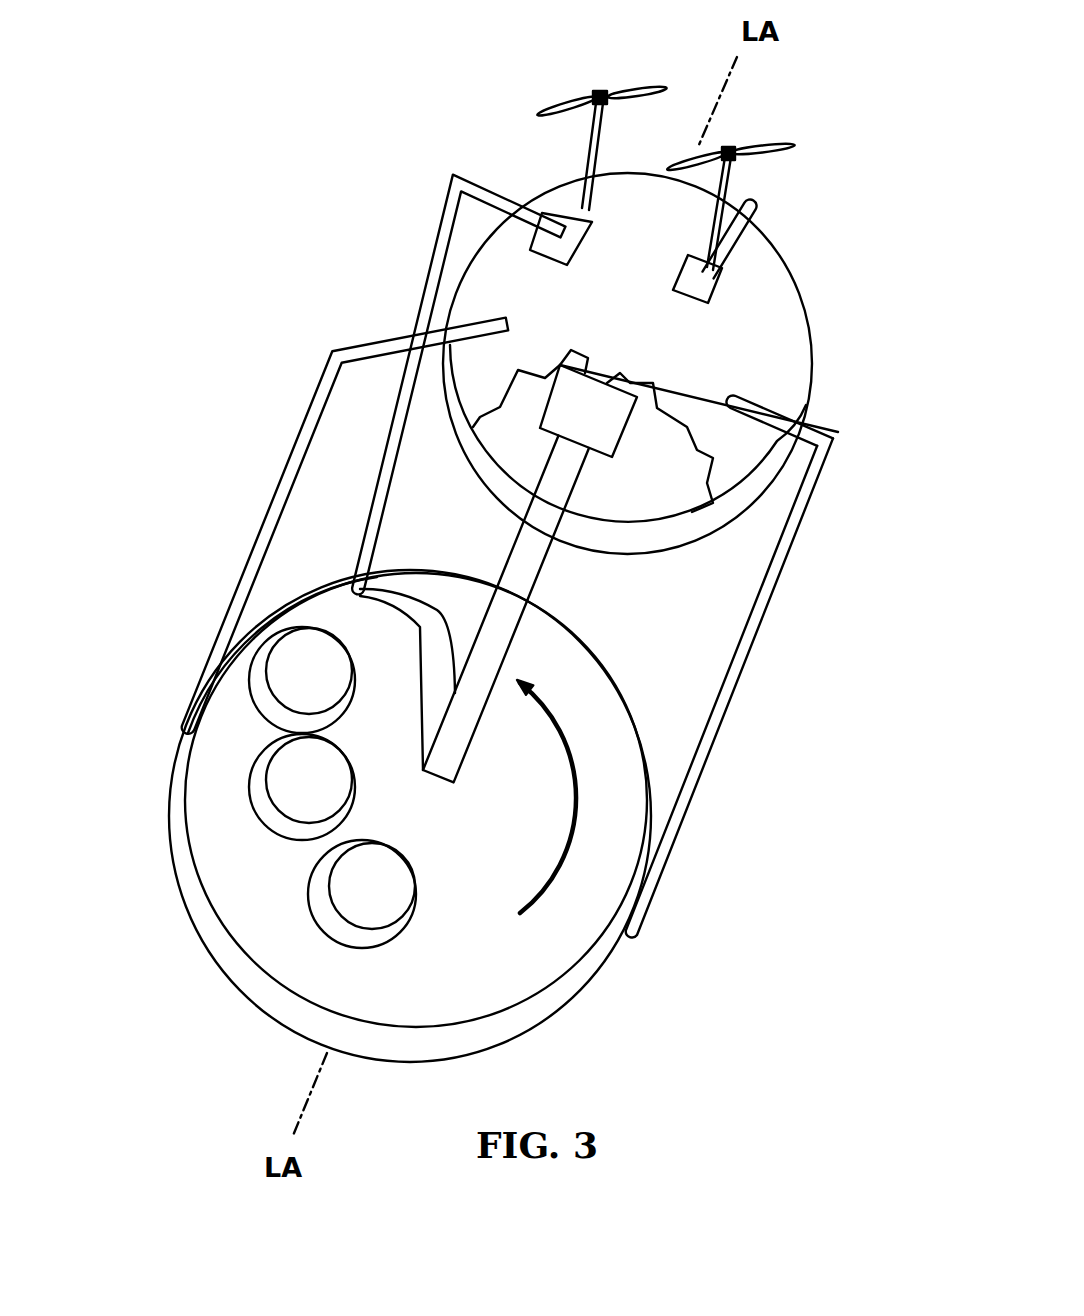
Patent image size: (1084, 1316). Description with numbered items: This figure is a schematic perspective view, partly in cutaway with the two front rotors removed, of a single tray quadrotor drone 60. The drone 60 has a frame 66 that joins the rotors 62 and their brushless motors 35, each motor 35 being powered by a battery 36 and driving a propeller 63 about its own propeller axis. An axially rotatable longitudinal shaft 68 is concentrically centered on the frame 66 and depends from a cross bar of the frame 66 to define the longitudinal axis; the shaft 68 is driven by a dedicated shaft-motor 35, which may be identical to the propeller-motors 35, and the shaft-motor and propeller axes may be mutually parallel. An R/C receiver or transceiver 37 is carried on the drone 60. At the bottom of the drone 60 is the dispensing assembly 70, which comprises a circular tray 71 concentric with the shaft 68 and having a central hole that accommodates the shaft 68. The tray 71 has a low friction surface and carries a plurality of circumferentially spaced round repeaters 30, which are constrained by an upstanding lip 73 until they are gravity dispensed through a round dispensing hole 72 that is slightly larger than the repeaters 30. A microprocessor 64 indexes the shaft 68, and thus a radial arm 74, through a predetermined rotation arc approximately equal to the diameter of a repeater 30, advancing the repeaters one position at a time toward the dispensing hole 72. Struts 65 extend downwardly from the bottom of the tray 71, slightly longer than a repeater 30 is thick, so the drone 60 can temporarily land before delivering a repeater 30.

The repeater 30 is at (313, 690).
The motor 35 is at (563, 230).
The battery 36 is at (607, 375).
The R/C receiver or transceiver 37 is at (552, 375).
The drone 60 is at (222, 473).
The rotor 62 is at (515, 122).
The propeller 63 is at (557, 112).
The microprocessor 64 is at (747, 417).
The strut 65 is at (424, 292).
The frame 66 is at (586, 301).
The shaft 68 is at (520, 563).
The dispensing assembly 70 is at (152, 770).
The circular tray 71 is at (510, 970).
The dispensing hole 72 is at (354, 900).
The lip 73 is at (220, 928).
The radial arm 74 is at (412, 600).